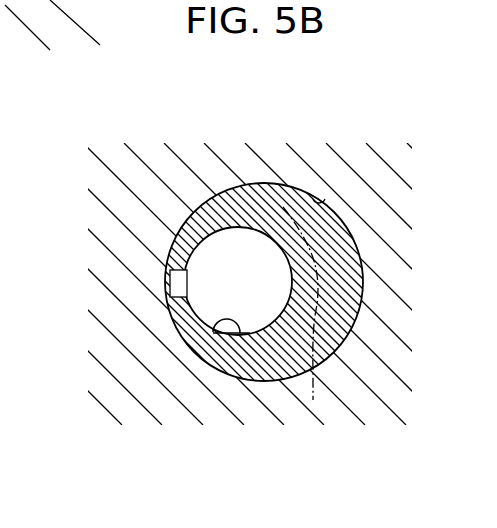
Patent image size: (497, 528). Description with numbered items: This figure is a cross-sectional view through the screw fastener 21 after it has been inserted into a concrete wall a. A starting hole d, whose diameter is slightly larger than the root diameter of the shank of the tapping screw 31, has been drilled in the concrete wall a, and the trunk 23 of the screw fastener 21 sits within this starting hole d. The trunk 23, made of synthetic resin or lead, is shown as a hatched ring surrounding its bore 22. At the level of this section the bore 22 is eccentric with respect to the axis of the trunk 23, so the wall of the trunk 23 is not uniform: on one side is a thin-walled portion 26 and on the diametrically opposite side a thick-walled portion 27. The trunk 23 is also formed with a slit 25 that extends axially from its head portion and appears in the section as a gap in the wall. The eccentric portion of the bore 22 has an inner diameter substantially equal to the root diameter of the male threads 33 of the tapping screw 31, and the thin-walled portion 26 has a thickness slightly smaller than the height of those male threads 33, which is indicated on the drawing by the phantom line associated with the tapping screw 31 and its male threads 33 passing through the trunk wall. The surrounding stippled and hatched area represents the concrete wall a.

The concrete wall a is at (372, 412).
The starting hole d is at (322, 200).
The screw fastener 21 is at (350, 227).
The bore 22 is at (235, 336).
The trunk 23 is at (268, 345).
The slit 25 is at (183, 288).
The thin-walled portion 26 is at (236, 333).
The thick-walled portion 27 is at (337, 307).
The tapping screw 31 is at (283, 203).
The male threads 33 is at (313, 400).